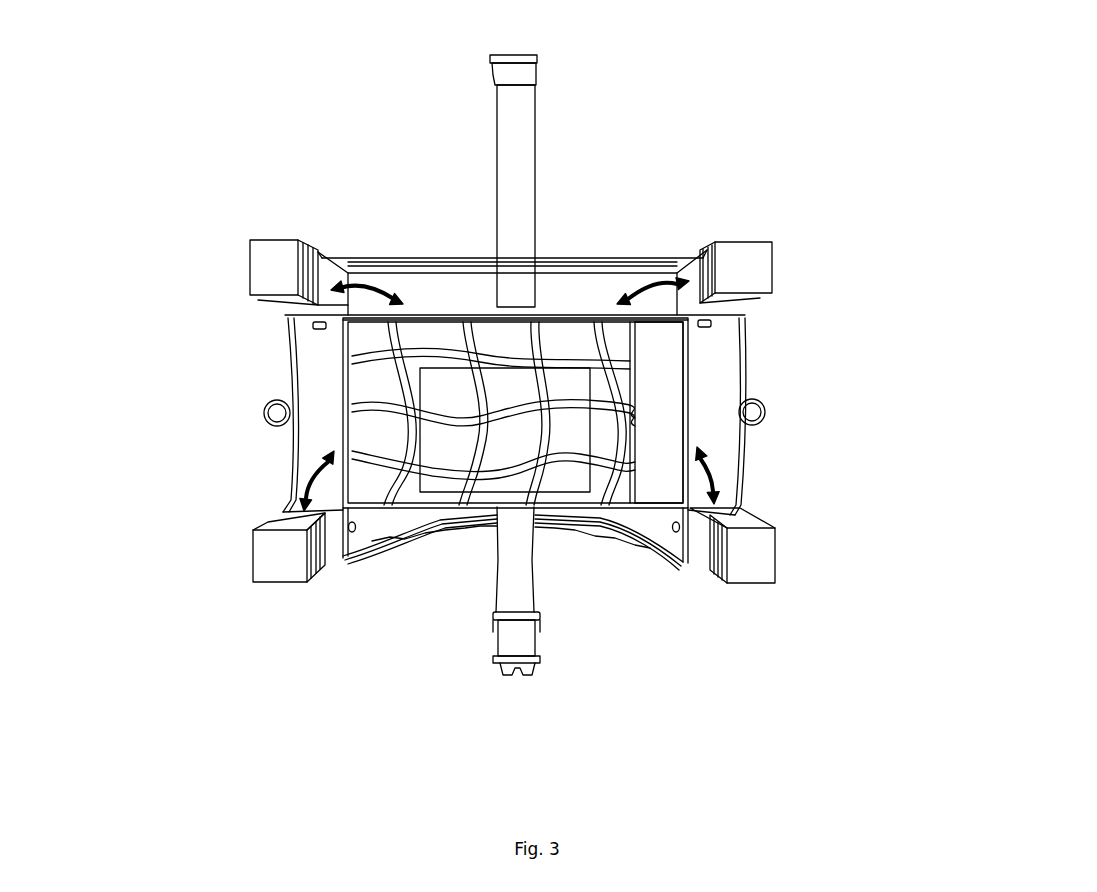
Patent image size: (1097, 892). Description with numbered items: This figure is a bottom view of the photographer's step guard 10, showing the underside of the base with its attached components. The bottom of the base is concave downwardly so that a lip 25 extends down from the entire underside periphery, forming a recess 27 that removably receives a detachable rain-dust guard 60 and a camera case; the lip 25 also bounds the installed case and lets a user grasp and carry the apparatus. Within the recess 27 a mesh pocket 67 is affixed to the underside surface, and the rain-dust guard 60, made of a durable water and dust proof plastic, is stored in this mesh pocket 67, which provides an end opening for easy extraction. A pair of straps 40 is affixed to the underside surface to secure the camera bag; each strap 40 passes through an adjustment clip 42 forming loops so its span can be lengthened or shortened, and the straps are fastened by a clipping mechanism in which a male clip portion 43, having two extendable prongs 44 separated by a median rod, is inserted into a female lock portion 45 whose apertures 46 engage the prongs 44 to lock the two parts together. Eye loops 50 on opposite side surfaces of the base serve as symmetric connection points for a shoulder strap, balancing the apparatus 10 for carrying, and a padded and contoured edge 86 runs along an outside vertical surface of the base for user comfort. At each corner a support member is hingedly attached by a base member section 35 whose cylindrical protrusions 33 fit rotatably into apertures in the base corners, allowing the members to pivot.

The photographer's step guard 10 is at (955, 125).
The lip 25 is at (435, 318).
The recess 27 is at (652, 473).
The cylindrical protrusion 33 is at (706, 322).
The base member section 35 is at (690, 290).
The strap 40 is at (488, 182).
The adjustment clip 42 is at (495, 625).
The male clip portion 43 is at (500, 657).
The extendable prong 44 is at (524, 670).
The female lock portion 45 is at (495, 60).
The aperture 46 is at (537, 80).
The eye loop 50 is at (762, 402).
The rain-dust guard 60 is at (575, 392).
The mesh pocket 67 is at (597, 337).
The contoured edge 86 is at (453, 533).